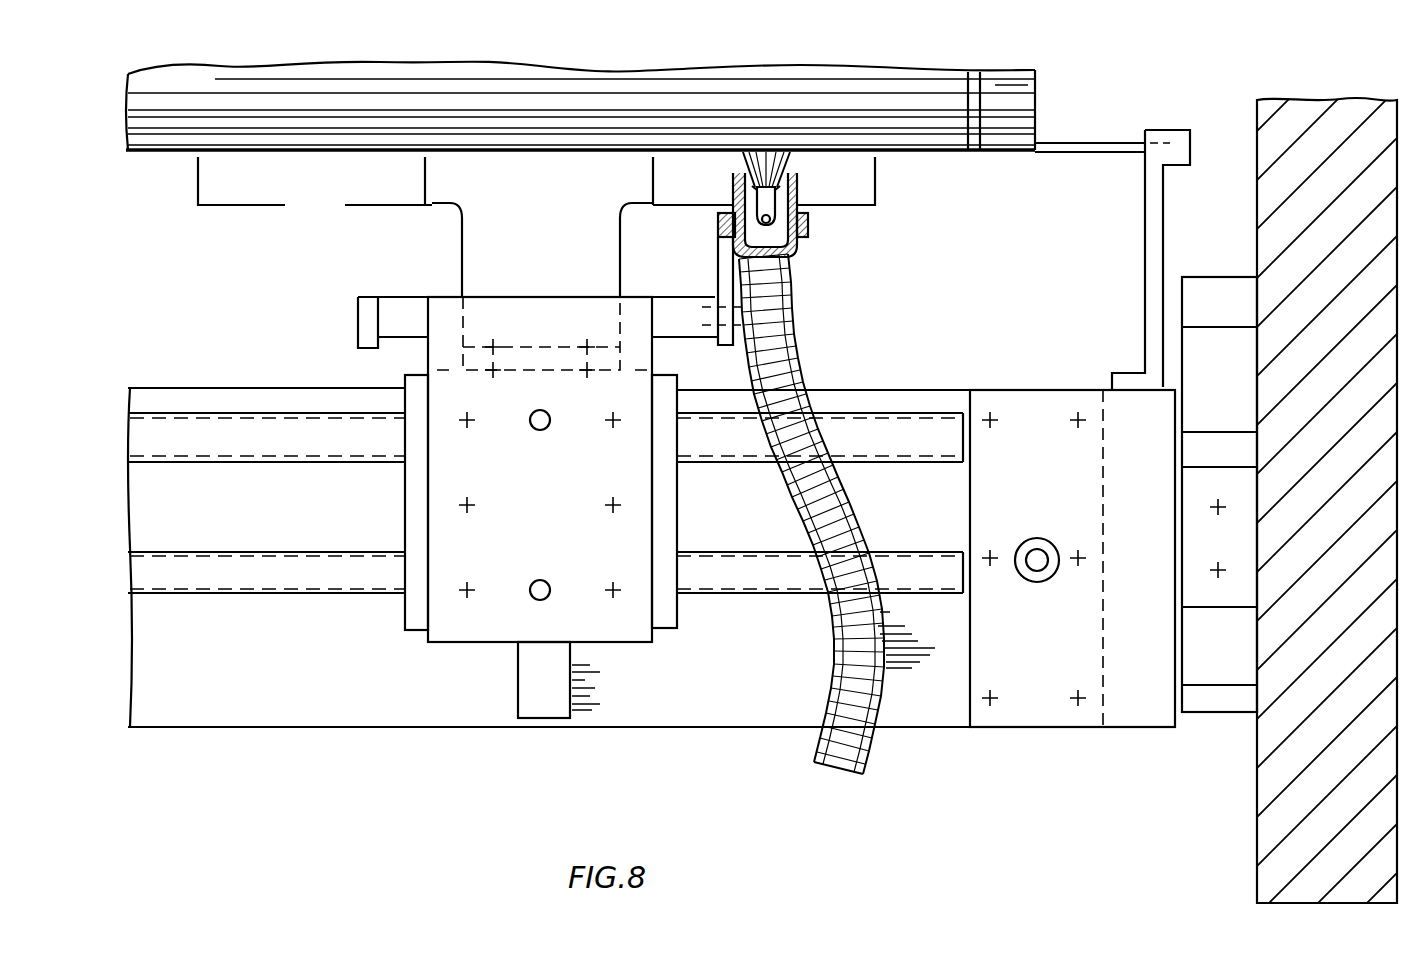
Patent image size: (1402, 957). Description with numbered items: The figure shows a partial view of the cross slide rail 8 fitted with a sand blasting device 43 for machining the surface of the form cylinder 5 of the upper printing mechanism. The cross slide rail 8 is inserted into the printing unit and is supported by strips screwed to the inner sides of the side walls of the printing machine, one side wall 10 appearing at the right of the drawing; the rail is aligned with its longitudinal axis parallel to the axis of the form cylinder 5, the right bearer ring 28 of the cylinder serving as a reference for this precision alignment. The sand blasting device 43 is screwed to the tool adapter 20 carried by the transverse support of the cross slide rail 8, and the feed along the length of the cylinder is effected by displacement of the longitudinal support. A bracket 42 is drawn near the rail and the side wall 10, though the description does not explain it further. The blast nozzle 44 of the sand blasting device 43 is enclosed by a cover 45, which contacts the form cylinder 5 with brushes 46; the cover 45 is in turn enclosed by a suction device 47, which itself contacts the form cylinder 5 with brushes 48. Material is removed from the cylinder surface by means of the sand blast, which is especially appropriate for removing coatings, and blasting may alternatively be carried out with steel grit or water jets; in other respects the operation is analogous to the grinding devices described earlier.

The form cylinder 5 is at (419, 90).
The cross slide rail 8 is at (282, 677).
The side wall 10 is at (1262, 118).
The tool adapter 20 is at (412, 622).
The bearer ring 28 is at (1005, 85).
The mounting bracket 42 is at (1100, 145).
The sand blasting device 43 is at (620, 630).
The blast nozzle 44 is at (765, 183).
The cover 45 is at (805, 195).
The brushes 46 is at (792, 178).
The suction device 47 is at (695, 160).
The brushes 48 is at (650, 178).